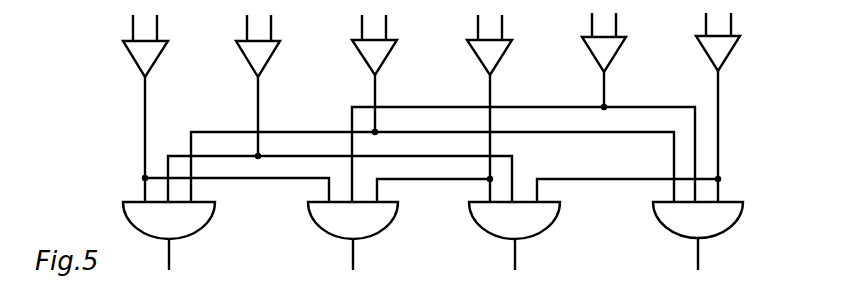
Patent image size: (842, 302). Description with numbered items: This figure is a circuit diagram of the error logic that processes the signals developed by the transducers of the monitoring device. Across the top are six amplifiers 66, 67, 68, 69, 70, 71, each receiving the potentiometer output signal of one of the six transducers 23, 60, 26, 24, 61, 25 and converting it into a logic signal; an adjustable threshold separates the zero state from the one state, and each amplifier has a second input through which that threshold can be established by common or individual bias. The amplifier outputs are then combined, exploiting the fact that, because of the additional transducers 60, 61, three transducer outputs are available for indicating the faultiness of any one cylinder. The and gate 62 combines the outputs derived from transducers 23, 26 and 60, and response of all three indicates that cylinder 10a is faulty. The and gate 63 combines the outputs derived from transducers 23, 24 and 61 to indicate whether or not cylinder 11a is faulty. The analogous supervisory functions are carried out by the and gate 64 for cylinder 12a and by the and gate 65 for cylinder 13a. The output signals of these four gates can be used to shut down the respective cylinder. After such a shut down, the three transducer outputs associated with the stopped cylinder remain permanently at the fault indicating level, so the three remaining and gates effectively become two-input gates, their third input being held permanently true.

The transducer 23 is at (131, 21).
The additional transducer 60 is at (245, 21).
The transducer 26 is at (359, 20).
The transducer 24 is at (474, 20).
The additional transducer 61 is at (588, 19).
The transducer 25 is at (703, 18).
The amplifier 66 is at (147, 53).
The amplifier 67 is at (259, 53).
The amplifier 68 is at (375, 52).
The amplifier 69 is at (491, 52).
The amplifier 70 is at (607, 49).
The amplifier 71 is at (722, 48).
The and gate 62 is at (181, 220).
The and gate 63 is at (340, 219).
The and gate 64 is at (500, 221).
The and gate 65 is at (688, 222).
The cylinder 10a is at (164, 291).
The cylinder 11a is at (356, 291).
The cylinder 12a is at (514, 291).
The cylinder 13a is at (696, 291).